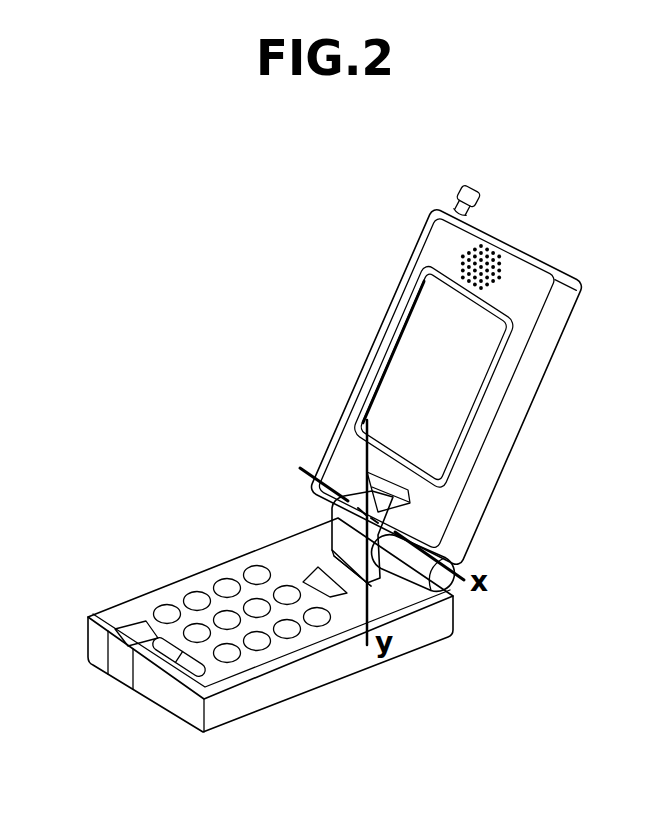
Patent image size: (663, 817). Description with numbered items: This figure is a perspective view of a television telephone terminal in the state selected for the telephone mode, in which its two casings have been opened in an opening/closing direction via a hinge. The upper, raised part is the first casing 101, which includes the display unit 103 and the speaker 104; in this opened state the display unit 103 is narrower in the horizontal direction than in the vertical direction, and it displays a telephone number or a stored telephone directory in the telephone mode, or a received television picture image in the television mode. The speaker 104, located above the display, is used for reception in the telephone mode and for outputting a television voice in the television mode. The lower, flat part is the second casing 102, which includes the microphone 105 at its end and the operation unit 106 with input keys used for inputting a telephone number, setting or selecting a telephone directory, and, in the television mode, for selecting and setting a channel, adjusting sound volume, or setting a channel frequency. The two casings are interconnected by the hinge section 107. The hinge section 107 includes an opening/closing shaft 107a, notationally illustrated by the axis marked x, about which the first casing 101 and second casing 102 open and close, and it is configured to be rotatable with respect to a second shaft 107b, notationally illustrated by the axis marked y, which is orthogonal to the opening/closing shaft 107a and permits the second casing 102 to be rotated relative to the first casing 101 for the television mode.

The first casing 101 is at (443, 256).
The second casing 102 is at (307, 678).
The display unit 103 is at (418, 363).
The speaker 104 is at (467, 253).
The microphone 105 is at (133, 635).
The operation unit 106 is at (258, 572).
The hinge section 107 is at (344, 540).
The opening/closing shaft 107a is at (447, 565).
The second shaft 107b is at (368, 603).